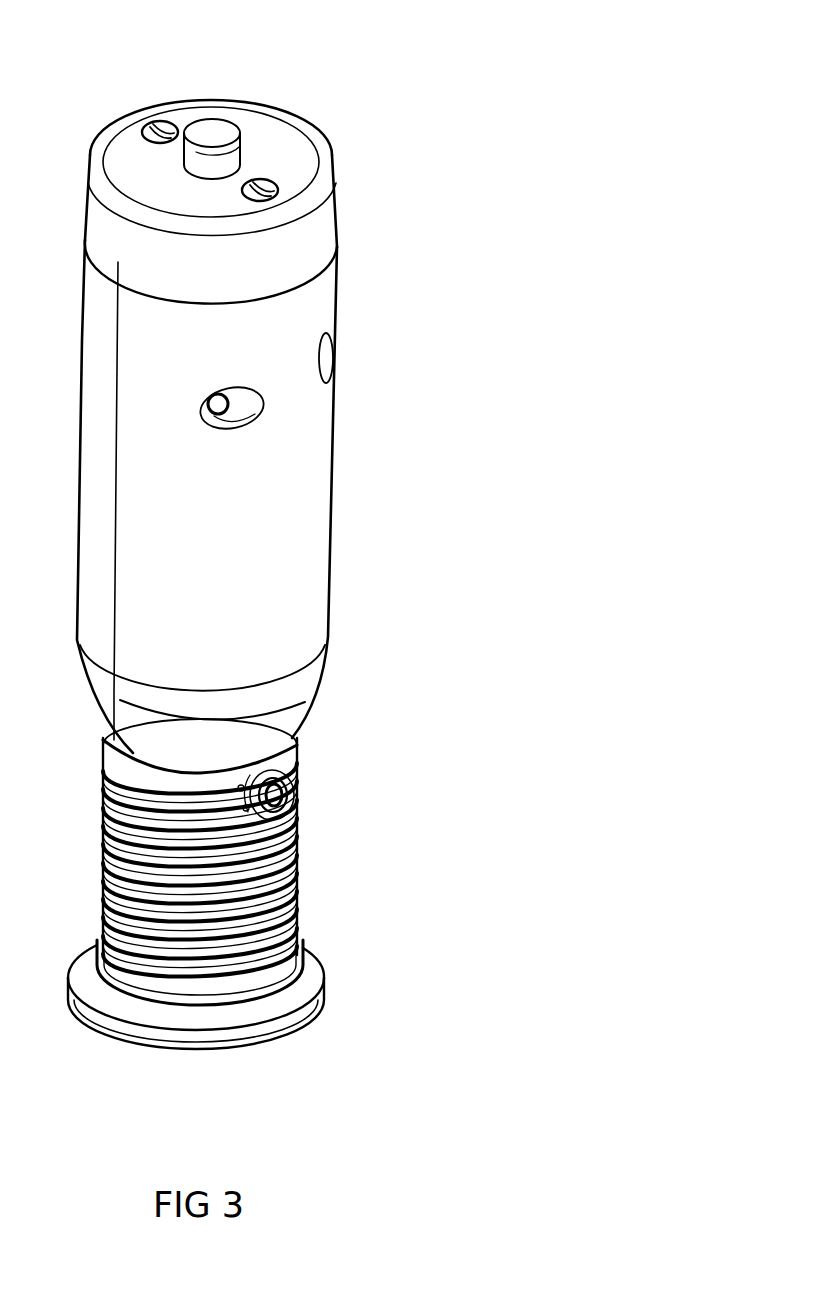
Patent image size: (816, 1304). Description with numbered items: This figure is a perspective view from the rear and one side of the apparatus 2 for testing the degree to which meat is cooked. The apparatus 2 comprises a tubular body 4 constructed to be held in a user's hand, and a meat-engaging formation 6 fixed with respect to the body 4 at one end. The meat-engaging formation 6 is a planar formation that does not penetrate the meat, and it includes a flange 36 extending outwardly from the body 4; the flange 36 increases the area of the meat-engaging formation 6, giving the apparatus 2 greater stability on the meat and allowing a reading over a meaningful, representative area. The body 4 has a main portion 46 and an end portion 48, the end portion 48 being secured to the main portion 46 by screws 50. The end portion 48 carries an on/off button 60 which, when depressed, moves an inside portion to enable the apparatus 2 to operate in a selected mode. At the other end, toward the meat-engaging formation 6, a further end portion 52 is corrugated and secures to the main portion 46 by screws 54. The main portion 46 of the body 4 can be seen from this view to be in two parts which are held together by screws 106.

The apparatus 2 is at (413, 95).
The body 4 is at (332, 488).
The meat-engaging formation 6 is at (275, 1035).
The flange 36 is at (313, 982).
The main portion 46 is at (313, 305).
The end portion 48 is at (307, 235).
The screws 50 is at (142, 125).
The end portion 52 is at (293, 858).
The screws 54 is at (293, 790).
The on/off button 60 is at (210, 137).
The screws 106 is at (333, 363).